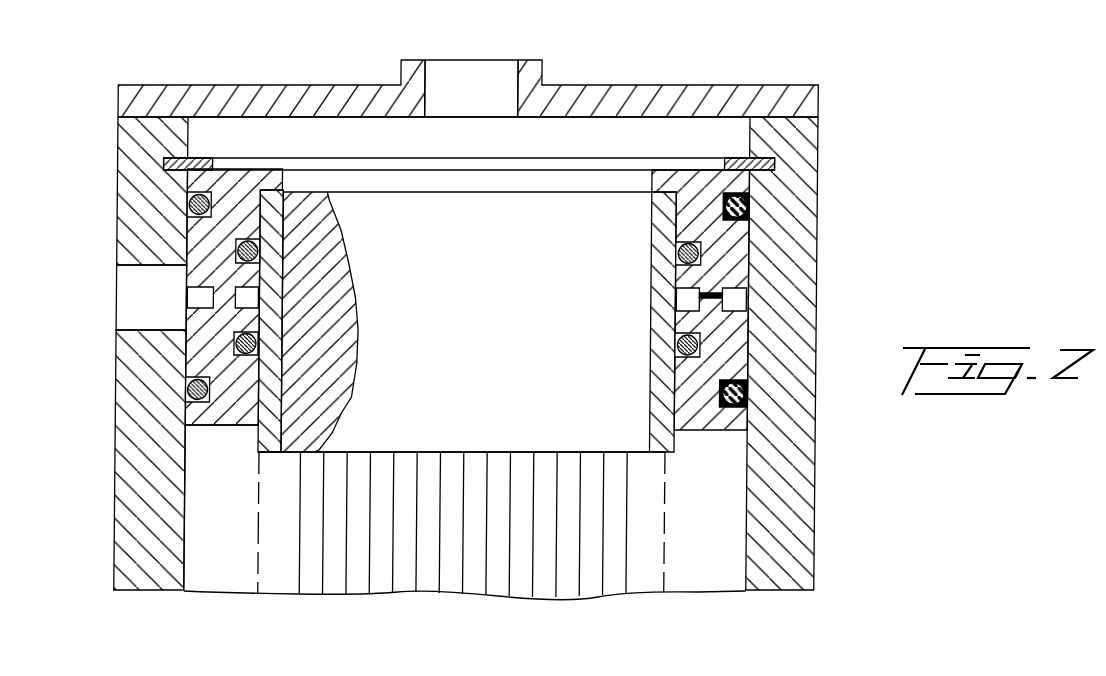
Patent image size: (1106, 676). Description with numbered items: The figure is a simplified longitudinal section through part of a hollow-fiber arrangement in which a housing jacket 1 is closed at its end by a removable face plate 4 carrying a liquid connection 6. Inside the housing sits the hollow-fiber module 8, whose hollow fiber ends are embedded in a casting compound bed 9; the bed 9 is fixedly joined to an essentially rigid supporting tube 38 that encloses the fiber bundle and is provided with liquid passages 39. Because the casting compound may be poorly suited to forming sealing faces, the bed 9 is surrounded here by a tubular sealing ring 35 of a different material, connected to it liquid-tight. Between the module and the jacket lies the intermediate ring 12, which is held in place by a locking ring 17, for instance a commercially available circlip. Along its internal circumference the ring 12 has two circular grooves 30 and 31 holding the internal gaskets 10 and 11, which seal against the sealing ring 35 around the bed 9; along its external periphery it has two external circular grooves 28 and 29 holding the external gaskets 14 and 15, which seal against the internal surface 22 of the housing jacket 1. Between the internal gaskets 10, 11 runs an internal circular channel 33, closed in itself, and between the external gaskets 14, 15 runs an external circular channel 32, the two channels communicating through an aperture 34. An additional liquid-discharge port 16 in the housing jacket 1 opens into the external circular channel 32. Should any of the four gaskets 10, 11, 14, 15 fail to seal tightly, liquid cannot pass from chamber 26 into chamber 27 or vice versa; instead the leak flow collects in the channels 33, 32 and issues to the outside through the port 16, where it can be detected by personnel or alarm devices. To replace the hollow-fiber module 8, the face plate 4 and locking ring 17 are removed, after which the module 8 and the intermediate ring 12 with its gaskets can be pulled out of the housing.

The housing jacket 1 is at (807, 542).
The removable face plate 4 is at (563, 93).
The liquid connection 6 is at (478, 94).
The hollow-fiber module 8 is at (590, 585).
The casting compound bed 9 is at (475, 305).
The internal gasket 10 is at (233, 262).
The internal gasket 11 is at (232, 342).
The intermediate ring 12 is at (693, 177).
The external gasket 14 is at (750, 213).
The external gasket 15 is at (749, 390).
The additional liquid-discharge port 16 is at (156, 325).
The locking ring 17 is at (238, 163).
The internal surface of the housing jacket 22 is at (185, 492).
The chamber 26 is at (389, 149).
The chamber 27 is at (233, 530).
The external circular groove 28 is at (750, 195).
The external circular groove 29 is at (749, 404).
The circular groove 30 is at (233, 250).
The circular groove 31 is at (232, 348).
The external circular channel 32 is at (742, 295).
The internal circular channel 33 is at (688, 299).
The aperture 34 is at (713, 298).
The tubular sealing ring 35 is at (263, 440).
The supporting tube 38 is at (260, 465).
The liquid passages 39 is at (260, 563).